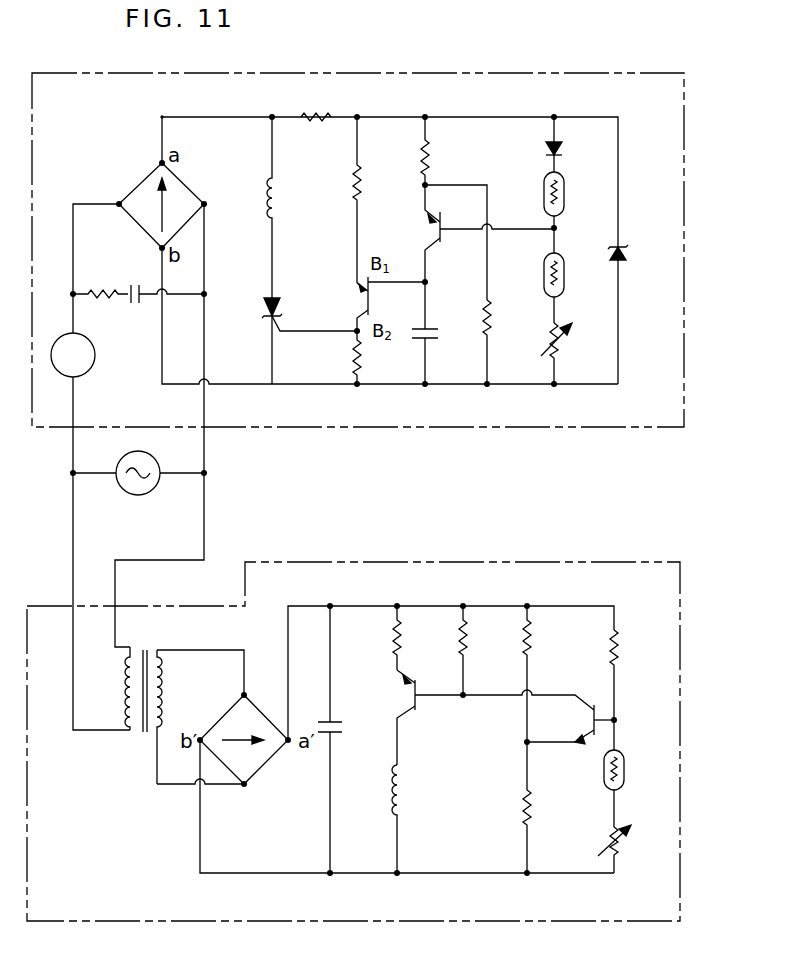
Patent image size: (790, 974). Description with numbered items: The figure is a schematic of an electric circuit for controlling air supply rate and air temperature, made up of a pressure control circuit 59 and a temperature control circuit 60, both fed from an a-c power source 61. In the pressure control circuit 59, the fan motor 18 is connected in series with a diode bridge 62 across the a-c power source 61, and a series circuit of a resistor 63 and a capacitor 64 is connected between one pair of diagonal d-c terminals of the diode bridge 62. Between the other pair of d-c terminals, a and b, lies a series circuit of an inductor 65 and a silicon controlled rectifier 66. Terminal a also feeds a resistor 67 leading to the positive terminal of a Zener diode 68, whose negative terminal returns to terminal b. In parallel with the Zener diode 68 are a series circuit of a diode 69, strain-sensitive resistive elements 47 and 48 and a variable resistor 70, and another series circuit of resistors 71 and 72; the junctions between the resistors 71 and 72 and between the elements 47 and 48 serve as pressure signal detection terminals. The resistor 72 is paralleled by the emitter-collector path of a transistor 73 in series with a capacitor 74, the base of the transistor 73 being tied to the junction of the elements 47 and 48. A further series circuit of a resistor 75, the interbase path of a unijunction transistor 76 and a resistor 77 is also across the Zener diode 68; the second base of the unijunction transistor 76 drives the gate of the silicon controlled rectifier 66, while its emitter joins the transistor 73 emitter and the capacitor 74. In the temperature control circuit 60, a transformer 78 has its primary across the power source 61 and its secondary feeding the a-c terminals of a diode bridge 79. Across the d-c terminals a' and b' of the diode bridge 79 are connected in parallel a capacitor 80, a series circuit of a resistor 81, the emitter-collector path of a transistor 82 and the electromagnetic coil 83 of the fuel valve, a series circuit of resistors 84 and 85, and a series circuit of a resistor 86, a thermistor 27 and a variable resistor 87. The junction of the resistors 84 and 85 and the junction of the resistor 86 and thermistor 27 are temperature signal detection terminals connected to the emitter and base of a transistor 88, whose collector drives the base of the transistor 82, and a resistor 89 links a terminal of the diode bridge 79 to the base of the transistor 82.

The pressure control circuit 59 is at (472, 73).
The temperature control circuit 60 is at (452, 921).
The diode bridge 62 is at (140, 182).
The resistor 63 is at (104, 282).
The capacitor 64 is at (135, 306).
The fan motor 18 is at (97, 356).
The a-c power source 61 is at (138, 495).
The resistor 67 is at (320, 107).
The inductor 65 is at (282, 196).
The silicon controlled rectifier 66 is at (282, 296).
The resistor 75 is at (367, 183).
The unijunction transistor 76 is at (358, 304).
The resistor 77 is at (367, 356).
The resistor 71 is at (435, 152).
The transistor 73 is at (446, 242).
The capacitor 74 is at (438, 340).
The resistor 72 is at (497, 320).
The diode 69 is at (565, 149).
The strain-sensitive resistive element 47 is at (566, 200).
The strain-sensitive resistive element 48 is at (566, 268).
The variable resistor 70 is at (566, 350).
The Zener diode 68 is at (628, 262).
The transformer 78 is at (145, 660).
The diode bridge 79 is at (248, 788).
The capacitor 80 is at (342, 734).
The resistor 81 is at (390, 646).
The transistor 82 is at (418, 708).
The electromagnetic coil 83 is at (408, 796).
The resistor 89 is at (468, 648).
The resistor 84 is at (534, 646).
The resistor 85 is at (534, 800).
The resistor 86 is at (622, 648).
The transistor 88 is at (598, 708).
The thermistor 27 is at (626, 768).
The variable resistor 87 is at (620, 852).